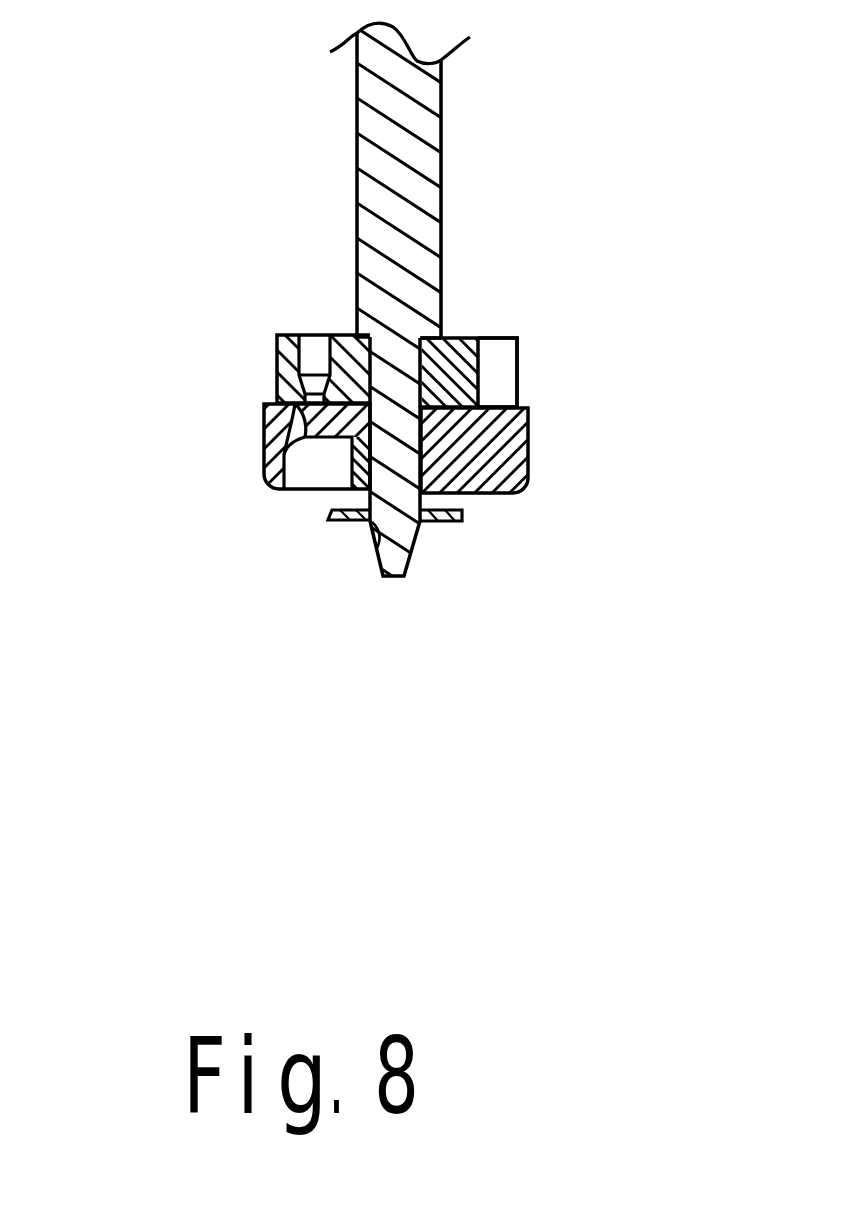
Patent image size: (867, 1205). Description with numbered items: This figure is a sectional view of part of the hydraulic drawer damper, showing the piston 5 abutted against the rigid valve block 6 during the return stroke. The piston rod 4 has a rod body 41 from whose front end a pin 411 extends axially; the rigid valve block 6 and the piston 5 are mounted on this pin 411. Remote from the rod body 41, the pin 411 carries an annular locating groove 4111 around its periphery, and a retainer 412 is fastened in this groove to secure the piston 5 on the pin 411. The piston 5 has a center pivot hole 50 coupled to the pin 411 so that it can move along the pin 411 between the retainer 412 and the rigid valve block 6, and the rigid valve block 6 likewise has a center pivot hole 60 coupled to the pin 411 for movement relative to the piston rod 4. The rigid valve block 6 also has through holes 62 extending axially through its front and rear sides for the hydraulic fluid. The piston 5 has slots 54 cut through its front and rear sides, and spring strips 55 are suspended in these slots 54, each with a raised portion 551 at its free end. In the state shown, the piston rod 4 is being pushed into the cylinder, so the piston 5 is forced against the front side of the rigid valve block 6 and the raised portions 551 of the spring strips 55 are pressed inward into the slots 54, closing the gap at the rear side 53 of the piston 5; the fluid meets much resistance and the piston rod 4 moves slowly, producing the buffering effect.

The piston rod 4 is at (318, 121).
The rod body 41 is at (357, 205).
The pin 411 is at (400, 358).
The annular locating groove 4111 is at (378, 555).
The retainer 412 is at (460, 521).
The piston 5 is at (245, 415).
The center pivot hole 50 is at (422, 453).
The rear side 53 is at (527, 408).
The slots 54 is at (334, 479).
The spring strips 55 is at (325, 438).
The raised portion 551 is at (284, 455).
The rigid valve block 6 is at (255, 355).
The center pivot hole 60 is at (422, 374).
The through holes 62 is at (315, 345).